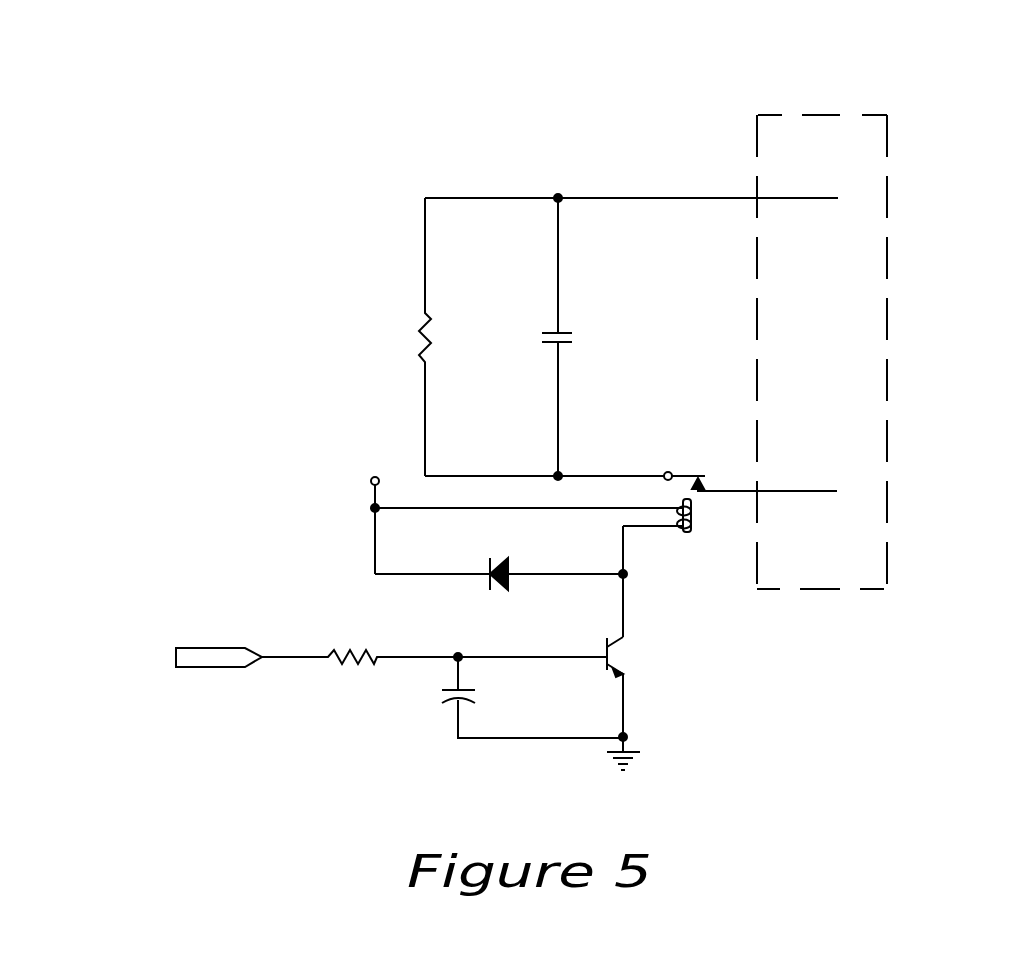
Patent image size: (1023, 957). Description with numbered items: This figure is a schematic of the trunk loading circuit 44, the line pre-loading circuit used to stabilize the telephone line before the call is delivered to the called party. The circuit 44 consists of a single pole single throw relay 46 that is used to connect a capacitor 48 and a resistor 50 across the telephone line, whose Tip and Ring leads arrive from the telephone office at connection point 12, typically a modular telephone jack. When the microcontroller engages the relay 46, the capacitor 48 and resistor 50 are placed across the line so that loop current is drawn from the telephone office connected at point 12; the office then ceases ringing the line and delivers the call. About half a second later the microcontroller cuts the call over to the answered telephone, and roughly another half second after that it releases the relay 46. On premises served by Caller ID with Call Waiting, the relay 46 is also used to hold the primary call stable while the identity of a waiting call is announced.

The connection point 12 is at (887, 115).
The trunk loading circuit 44 is at (531, 485).
The single pole single throw relay 46 is at (693, 537).
The capacitor 48 is at (552, 327).
The resistor 50 is at (427, 317).